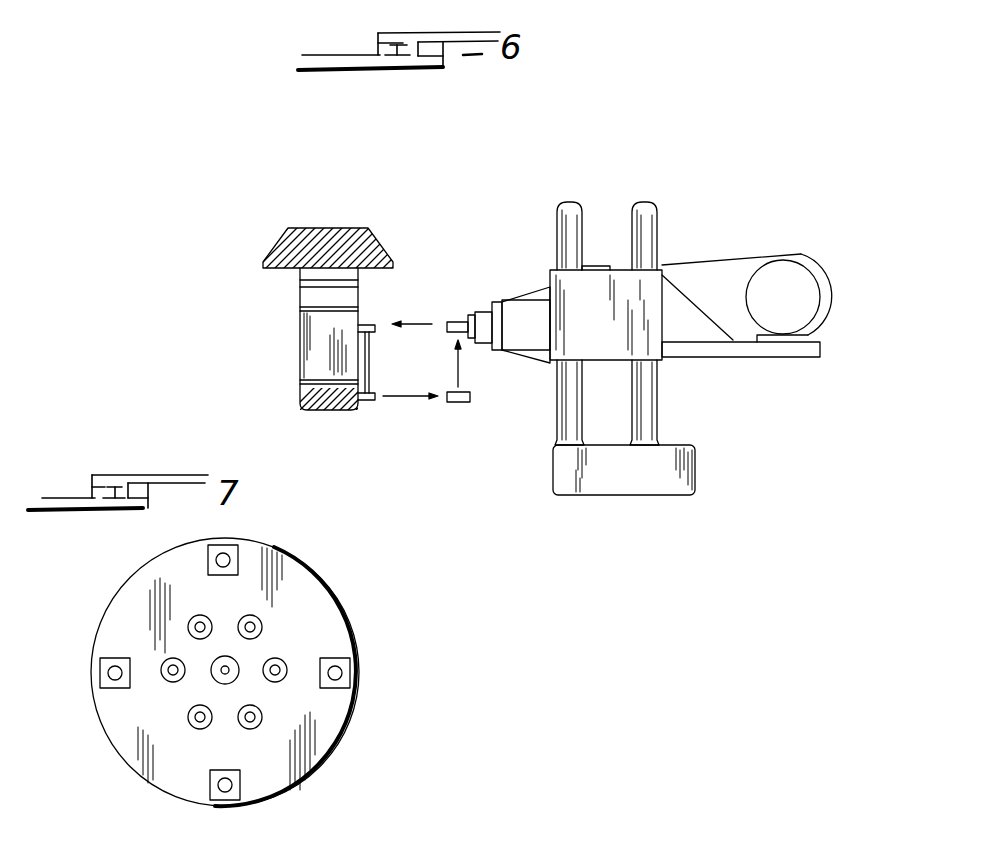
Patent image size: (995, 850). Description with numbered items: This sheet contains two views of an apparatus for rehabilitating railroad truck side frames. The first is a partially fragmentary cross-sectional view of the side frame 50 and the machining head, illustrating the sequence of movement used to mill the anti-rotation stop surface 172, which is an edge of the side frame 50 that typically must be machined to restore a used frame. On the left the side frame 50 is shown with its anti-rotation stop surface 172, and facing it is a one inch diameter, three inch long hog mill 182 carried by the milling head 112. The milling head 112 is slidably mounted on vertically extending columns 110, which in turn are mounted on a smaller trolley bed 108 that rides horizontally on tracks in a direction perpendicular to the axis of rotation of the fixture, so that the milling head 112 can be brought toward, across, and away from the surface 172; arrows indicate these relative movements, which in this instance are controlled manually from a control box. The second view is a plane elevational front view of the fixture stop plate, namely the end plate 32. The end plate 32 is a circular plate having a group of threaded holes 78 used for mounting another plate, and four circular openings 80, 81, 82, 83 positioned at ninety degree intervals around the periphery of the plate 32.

In FIG. 6, the side frame 50 is at (325, 228).
In FIG. 6, the anti-rotation stop surface 172 is at (369, 360).
In FIG. 6, the hog mill 182 is at (460, 320).
In FIG. 6, the milling head 112 is at (517, 290).
In FIG. 6, the columns 110 is at (657, 227).
In FIG. 6, the trolley bed 108 is at (682, 443).
In FIG. 7, the end plate 32 is at (348, 598).
In FIG. 7, the threaded holes 78 is at (262, 627).
In FIG. 7, the circular opening 80 is at (338, 673).
In FIG. 7, the circular opening 81 is at (226, 557).
In FIG. 7, the circular opening 82 is at (112, 673).
In FIG. 7, the circular opening 83 is at (232, 785).